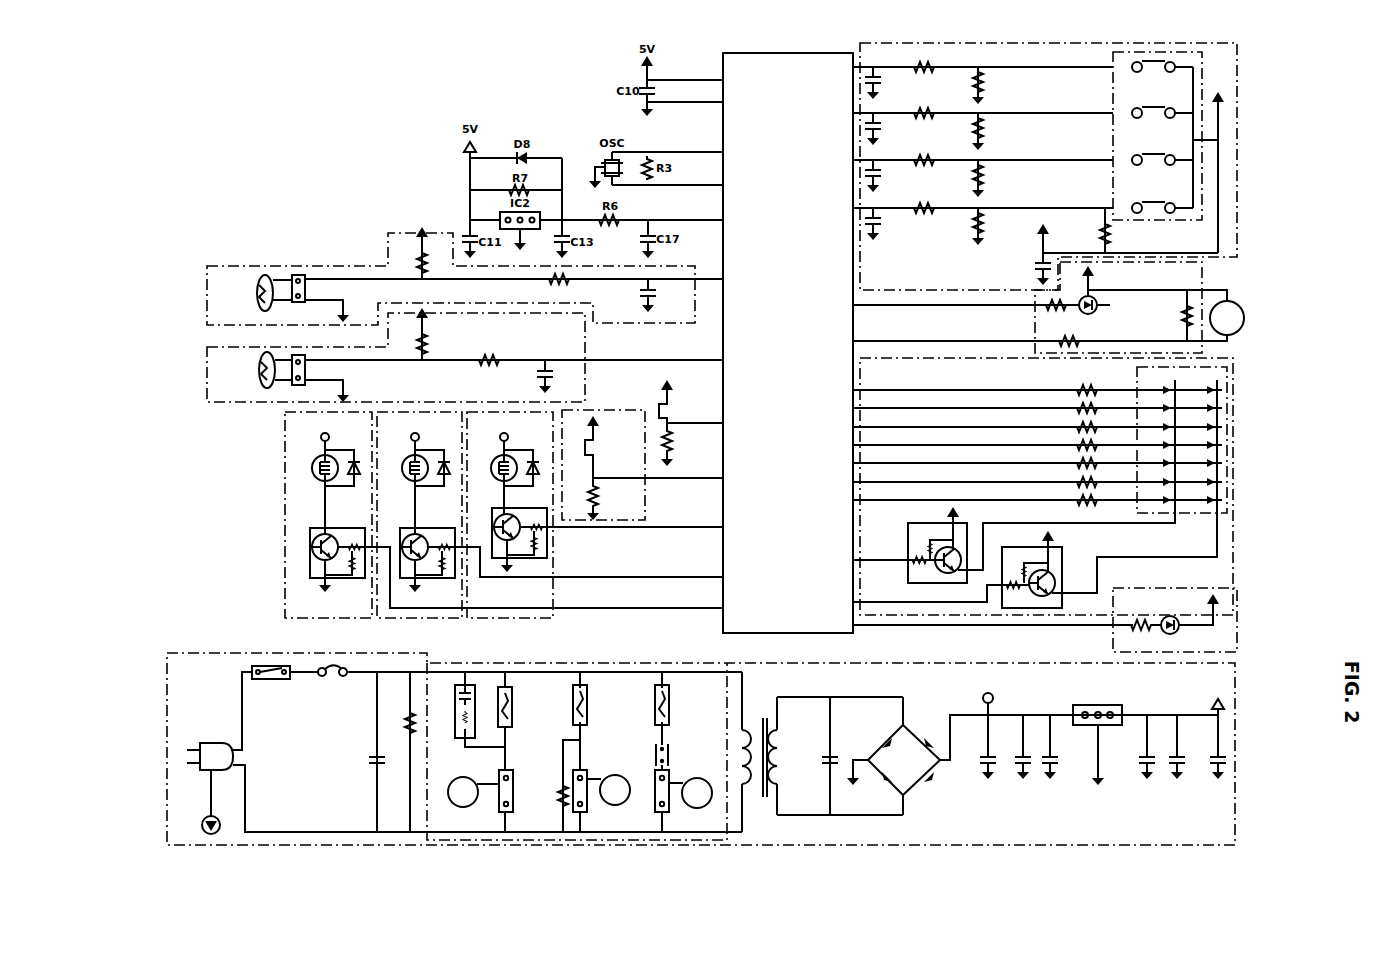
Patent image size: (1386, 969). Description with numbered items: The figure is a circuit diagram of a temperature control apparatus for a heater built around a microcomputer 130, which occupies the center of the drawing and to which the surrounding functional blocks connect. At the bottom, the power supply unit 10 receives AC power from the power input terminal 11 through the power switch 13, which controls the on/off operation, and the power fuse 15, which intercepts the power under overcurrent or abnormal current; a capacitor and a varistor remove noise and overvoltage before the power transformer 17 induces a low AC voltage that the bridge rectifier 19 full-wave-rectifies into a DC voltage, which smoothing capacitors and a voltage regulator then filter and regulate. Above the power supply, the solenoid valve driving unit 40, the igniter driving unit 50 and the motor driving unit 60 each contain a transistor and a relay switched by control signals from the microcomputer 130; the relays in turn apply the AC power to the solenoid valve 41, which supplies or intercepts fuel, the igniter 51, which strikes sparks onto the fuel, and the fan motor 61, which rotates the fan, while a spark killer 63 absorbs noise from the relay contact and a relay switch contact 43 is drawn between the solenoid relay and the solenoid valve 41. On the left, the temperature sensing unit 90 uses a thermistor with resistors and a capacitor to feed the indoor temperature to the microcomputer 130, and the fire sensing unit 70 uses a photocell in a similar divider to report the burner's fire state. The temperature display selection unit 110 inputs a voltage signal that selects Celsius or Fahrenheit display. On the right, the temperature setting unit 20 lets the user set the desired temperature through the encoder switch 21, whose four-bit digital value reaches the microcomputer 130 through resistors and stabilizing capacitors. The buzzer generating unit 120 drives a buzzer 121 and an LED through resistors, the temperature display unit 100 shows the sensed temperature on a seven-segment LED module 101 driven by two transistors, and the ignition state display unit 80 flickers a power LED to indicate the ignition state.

The power supply unit 10 is at (728, 770).
The power input terminal 11 is at (217, 770).
The power switch 13 is at (270, 680).
The power fuse 15 is at (327, 680).
The power transformer 17 is at (765, 800).
The bridge rectifier 19 is at (913, 789).
The temperature setting unit 20 is at (1071, 166).
The encoder switch 21 is at (1203, 192).
The solenoid valve driving unit 40 is at (284, 515).
The solenoid valve 41 is at (701, 808).
The relay switch 43 is at (650, 758).
The igniter driving unit 50 is at (438, 620).
The igniter 51 is at (612, 805).
The motor driving unit 60 is at (507, 620).
The fan motor 61 is at (466, 807).
The spark killer 63 is at (455, 727).
The fire sensing unit 70 is at (206, 376).
The ignition state display unit 80 is at (1238, 618).
The temperature sensing unit 90 is at (206, 300).
The temperature display unit 100 is at (1076, 486).
The 7-segment type LED module 101 is at (1212, 514).
The temperature display selection unit 110 is at (646, 490).
The buzzer generating unit 120 is at (1203, 283).
The buzzer 121 is at (1244, 318).
The microcomputer 130 is at (805, 93).